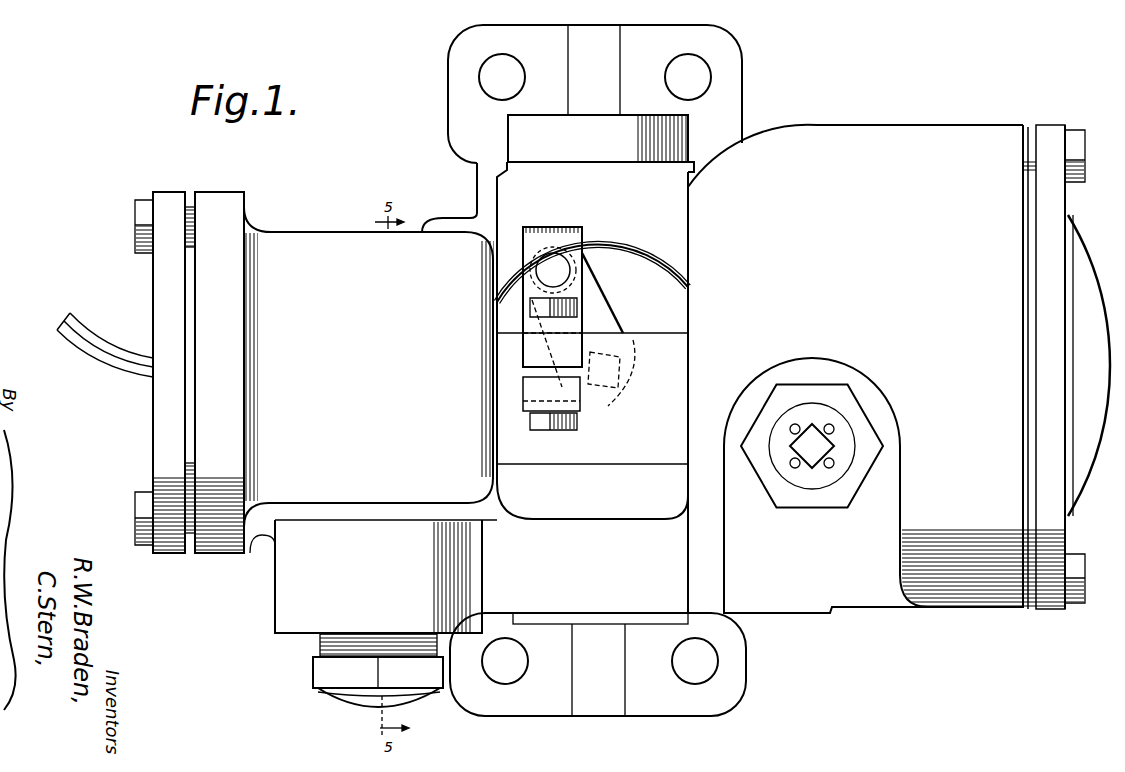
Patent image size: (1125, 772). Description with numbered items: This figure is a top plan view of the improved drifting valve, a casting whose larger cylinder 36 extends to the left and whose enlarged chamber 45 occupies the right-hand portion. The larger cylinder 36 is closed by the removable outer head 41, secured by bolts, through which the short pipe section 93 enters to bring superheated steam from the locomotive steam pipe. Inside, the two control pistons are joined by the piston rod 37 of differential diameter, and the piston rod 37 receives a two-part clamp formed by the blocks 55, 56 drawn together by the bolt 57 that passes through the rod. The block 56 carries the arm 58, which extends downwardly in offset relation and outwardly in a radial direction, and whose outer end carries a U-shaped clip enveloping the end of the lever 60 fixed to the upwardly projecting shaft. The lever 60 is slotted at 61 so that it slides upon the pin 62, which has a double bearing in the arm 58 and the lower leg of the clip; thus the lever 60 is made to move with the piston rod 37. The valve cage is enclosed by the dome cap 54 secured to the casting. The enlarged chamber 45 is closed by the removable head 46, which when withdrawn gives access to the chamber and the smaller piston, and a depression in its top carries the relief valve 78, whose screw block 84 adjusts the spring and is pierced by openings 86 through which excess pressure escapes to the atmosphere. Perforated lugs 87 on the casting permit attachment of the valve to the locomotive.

The larger cylinder 36 is at (356, 224).
The piston rod 37 is at (678, 358).
The outer head 41 is at (159, 453).
The chamber 45 is at (867, 138).
The removable head 46 is at (1043, 302).
The dome cap 54 is at (320, 679).
The block 55 is at (535, 392).
The block 56 is at (533, 345).
The bolt 57 is at (562, 431).
The arm 58 is at (533, 243).
The lever 60 is at (608, 313).
The slot 61 is at (605, 263).
The pin 62 is at (550, 267).
The relief valve 78 is at (865, 436).
The screw block 84 is at (803, 410).
The openings 86 is at (833, 426).
The perforated lugs 87 is at (712, 48).
The short pipe section 93 is at (63, 332).